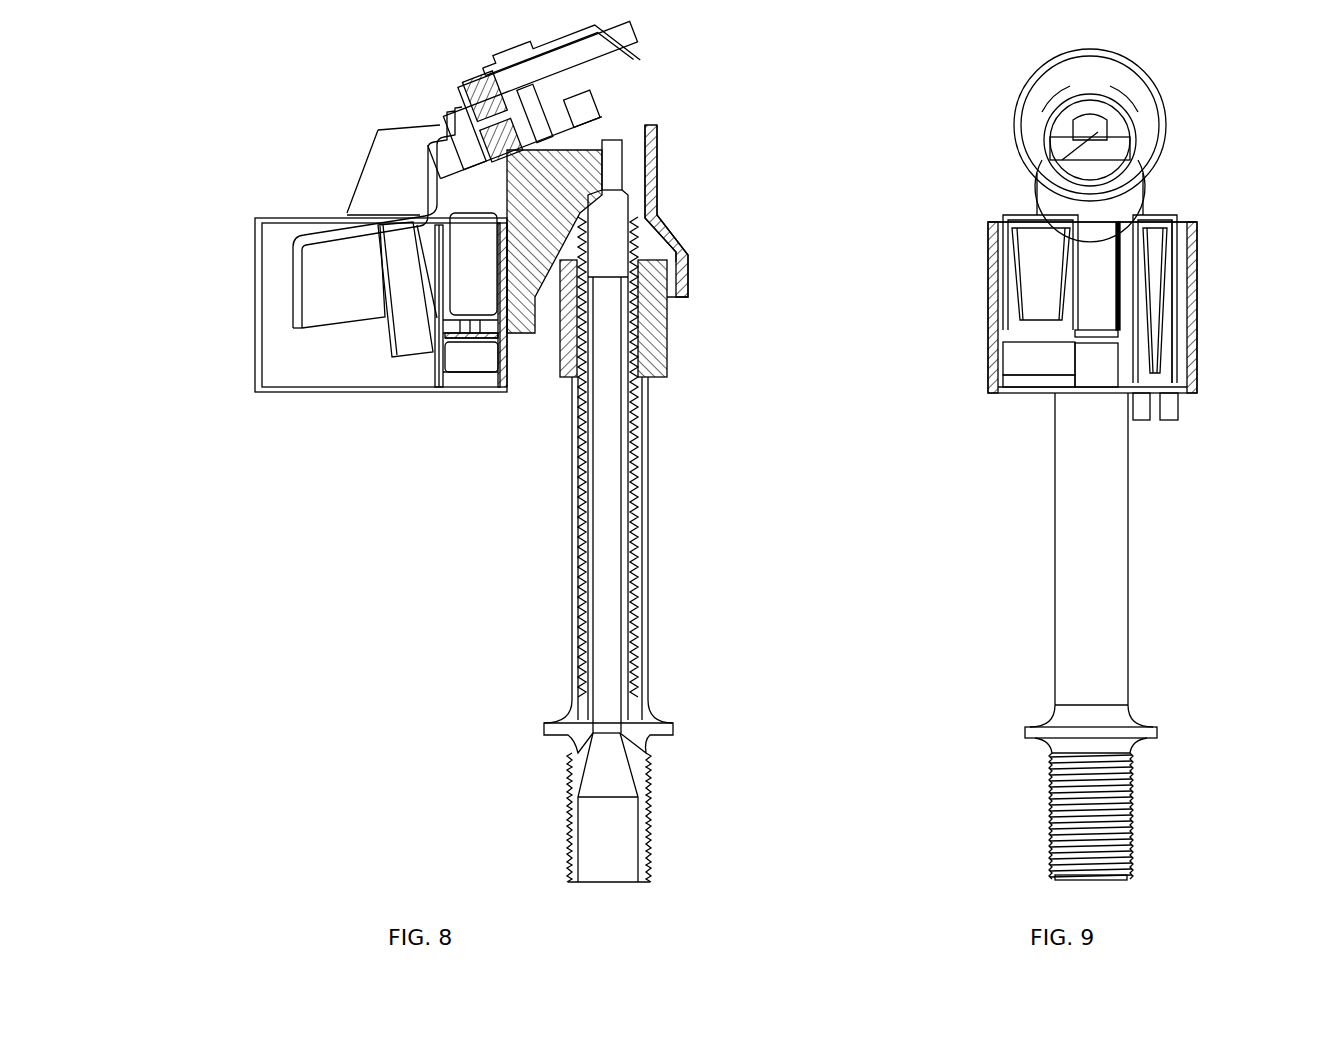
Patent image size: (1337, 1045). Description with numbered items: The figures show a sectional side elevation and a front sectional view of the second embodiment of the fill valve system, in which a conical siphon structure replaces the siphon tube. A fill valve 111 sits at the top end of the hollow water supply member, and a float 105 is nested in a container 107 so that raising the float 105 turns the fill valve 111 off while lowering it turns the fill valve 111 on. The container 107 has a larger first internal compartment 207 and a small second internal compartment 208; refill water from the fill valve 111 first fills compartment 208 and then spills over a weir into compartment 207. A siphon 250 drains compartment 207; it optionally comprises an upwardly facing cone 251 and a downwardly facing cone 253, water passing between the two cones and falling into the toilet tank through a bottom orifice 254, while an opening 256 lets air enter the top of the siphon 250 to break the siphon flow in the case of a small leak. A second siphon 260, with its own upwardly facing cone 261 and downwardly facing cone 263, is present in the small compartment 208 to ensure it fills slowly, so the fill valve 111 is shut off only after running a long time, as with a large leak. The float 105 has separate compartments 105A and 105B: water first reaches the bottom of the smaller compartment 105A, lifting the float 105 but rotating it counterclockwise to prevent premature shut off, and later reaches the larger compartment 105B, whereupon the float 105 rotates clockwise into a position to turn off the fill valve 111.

In FIG. 8, the fill valve 111 is at (528, 65).
In FIG. 9, the fill valve 111 is at (1140, 75).
In FIG. 8, the float 105 is at (328, 230).
In FIG. 8, the first float compartment 105A is at (405, 343).
In FIG. 8, the second float compartment 105B is at (305, 298).
In FIG. 8, the container 107 is at (298, 375).
In FIG. 8, the first internal compartment 207 is at (373, 375).
In FIG. 8, the second internal compartment 208 is at (498, 332).
In FIG. 9, the siphon 250 is at (1205, 308).
In FIG. 9, the upwardly facing cone 251 is at (1175, 272).
In FIG. 9, the downwardly facing cone 253 is at (1165, 215).
In FIG. 9, the bottom orifice 254 is at (1165, 443).
In FIG. 9, the opening 256 is at (1180, 215).
In FIG. 9, the second siphon 260 is at (945, 238).
In FIG. 9, the upwardly facing cone 261 is at (1008, 313).
In FIG. 9, the downwardly facing cone 263 is at (1003, 272).